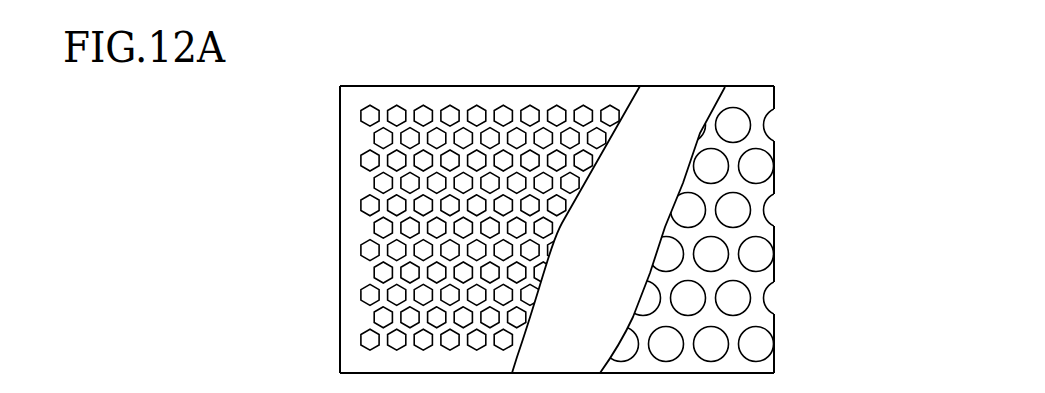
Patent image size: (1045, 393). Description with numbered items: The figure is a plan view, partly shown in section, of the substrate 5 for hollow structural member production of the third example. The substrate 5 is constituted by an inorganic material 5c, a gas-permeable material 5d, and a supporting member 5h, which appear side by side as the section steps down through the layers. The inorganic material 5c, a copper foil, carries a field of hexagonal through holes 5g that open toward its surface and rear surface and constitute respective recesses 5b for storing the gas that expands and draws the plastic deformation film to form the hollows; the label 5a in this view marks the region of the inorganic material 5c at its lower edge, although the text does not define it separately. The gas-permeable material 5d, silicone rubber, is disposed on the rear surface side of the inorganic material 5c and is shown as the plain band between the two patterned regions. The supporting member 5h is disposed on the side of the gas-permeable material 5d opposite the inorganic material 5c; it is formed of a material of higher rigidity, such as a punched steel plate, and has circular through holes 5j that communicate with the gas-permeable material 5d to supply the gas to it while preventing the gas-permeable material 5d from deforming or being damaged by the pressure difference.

The substrate for hollow structural member production 5 is at (337, 257).
The first surface 5a is at (493, 353).
The recesses 5b is at (477, 114).
The inorganic material 5c is at (350, 185).
The gas-permeable material 5d is at (673, 101).
The through holes 5g is at (418, 177).
The supporting member 5h is at (752, 95).
The through holes 5j is at (730, 212).